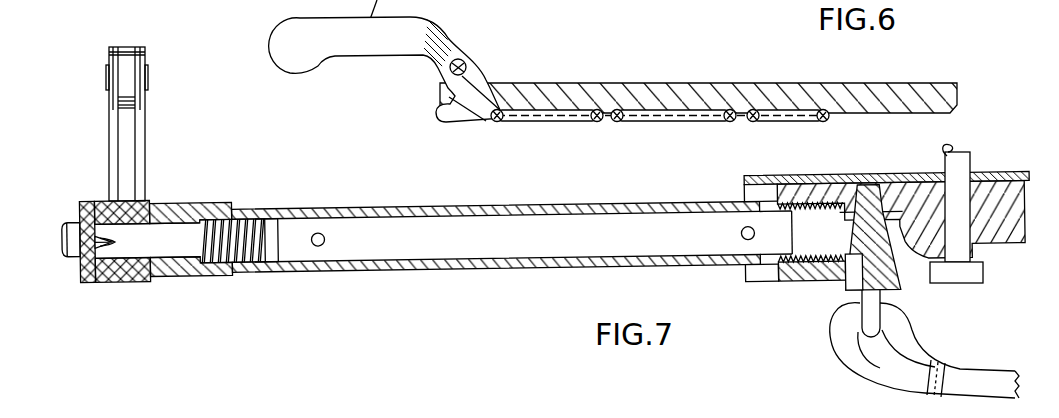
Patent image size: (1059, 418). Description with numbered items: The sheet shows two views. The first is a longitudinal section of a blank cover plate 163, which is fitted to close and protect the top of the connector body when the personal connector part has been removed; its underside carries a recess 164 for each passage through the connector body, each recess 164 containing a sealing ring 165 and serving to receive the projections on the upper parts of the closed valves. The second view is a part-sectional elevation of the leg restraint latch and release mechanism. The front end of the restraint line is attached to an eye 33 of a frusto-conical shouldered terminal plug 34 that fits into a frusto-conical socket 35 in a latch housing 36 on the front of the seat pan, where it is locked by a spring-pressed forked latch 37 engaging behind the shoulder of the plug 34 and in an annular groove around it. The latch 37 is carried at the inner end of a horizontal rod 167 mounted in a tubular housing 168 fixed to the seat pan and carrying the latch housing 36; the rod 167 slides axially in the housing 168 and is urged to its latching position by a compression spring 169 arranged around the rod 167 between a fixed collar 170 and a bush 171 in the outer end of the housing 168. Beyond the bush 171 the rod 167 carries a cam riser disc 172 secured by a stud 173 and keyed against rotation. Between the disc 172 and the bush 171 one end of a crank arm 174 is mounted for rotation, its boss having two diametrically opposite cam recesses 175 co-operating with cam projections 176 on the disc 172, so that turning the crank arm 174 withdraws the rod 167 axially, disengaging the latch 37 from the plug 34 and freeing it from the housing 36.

In FIG. 6, the blank cover plate 163 is at (551, 88).
In FIG. 6, the recess 164 is at (690, 112).
In FIG. 6, the sealing ring 165 is at (660, 132).
In FIG. 7, the rod 167 is at (489, 246).
In FIG. 7, the tubular housing 168 is at (373, 267).
In FIG. 7, the compression spring 169 is at (262, 274).
In FIG. 7, the fixed collar 170 is at (271, 216).
In FIG. 7, the bush 171 is at (190, 264).
In FIG. 7, the cam riser disc 172 is at (96, 199).
In FIG. 7, the stud 173 is at (74, 262).
In FIG. 7, the crank arm 174 is at (149, 136).
In FIG. 7, the cam recess 175 is at (104, 237).
In FIG. 7, the cam projection 176 is at (110, 252).
In FIG. 7, the eye 33 is at (860, 328).
In FIG. 7, the terminal plug 34 is at (895, 290).
In FIG. 7, the socket 35 is at (990, 223).
In FIG. 7, the latch housing 36 is at (994, 178).
In FIG. 7, the forked latch 37 is at (850, 226).